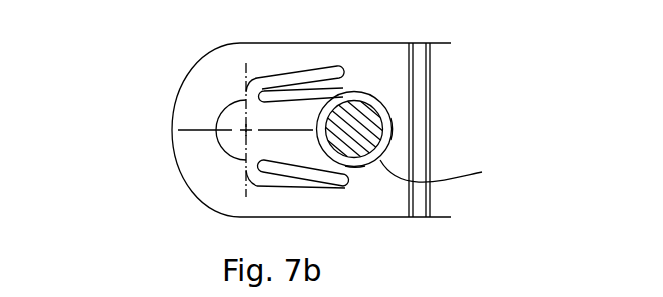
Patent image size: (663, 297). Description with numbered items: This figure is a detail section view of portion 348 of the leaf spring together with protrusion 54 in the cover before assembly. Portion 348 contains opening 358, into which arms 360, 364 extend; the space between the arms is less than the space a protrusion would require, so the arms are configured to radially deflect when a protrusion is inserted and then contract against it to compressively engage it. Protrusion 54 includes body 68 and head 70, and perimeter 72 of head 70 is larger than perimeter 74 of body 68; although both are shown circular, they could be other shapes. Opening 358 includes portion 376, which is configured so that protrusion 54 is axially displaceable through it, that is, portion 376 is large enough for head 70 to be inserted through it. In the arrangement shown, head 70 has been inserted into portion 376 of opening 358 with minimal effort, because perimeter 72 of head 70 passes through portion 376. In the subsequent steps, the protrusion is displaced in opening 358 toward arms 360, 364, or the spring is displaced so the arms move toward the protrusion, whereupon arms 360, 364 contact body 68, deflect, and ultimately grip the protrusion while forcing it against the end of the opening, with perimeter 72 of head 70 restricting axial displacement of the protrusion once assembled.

The portion 348 is at (202, 108).
The opening 358 is at (217, 140).
The arm 360 is at (300, 88).
The arm 364 is at (313, 172).
The head 70 is at (353, 90).
The body 68 is at (358, 131).
The perimeter 72 is at (398, 128).
The perimeter 74 is at (448, 167).
The protrusion 54 is at (400, 145).
The portion 376 is at (358, 172).